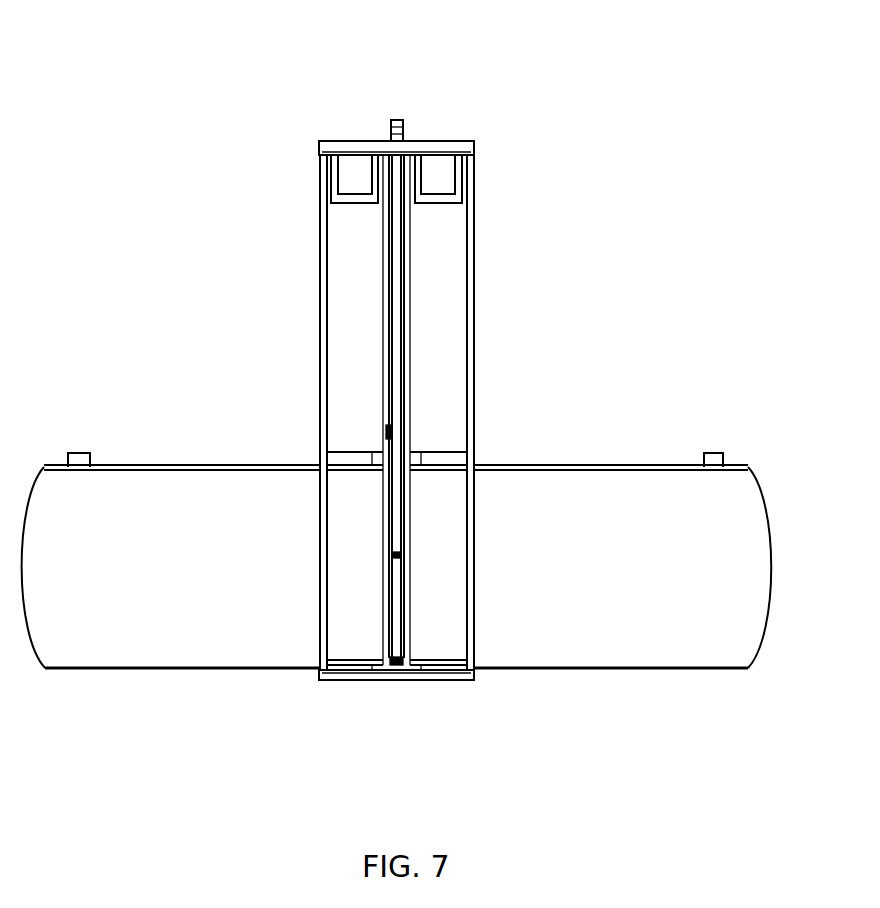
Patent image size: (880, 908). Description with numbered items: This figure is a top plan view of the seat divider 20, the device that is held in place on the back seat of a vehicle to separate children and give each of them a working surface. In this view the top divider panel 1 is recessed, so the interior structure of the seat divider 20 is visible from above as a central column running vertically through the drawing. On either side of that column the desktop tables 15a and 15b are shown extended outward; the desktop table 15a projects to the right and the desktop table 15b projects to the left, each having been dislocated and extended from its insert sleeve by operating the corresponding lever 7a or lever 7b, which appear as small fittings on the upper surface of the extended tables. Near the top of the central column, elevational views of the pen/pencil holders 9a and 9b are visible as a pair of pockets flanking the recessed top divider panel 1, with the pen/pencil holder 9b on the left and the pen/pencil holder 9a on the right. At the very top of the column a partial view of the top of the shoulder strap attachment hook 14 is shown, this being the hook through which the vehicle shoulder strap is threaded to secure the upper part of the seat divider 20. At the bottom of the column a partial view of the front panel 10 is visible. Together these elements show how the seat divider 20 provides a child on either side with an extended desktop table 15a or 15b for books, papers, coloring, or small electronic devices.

The seat divider 20 is at (255, 116).
The shoulder strap attachment hook 14 is at (394, 110).
The pen/pencil holder 9a is at (432, 178).
The pen/pencil holder 9b is at (357, 178).
The top divider panel 1 is at (382, 266).
The lever 7a is at (717, 440).
The lever 7b is at (81, 440).
The desktop table 15a is at (596, 452).
The desktop table 15b is at (206, 452).
The front panel 10 is at (394, 683).